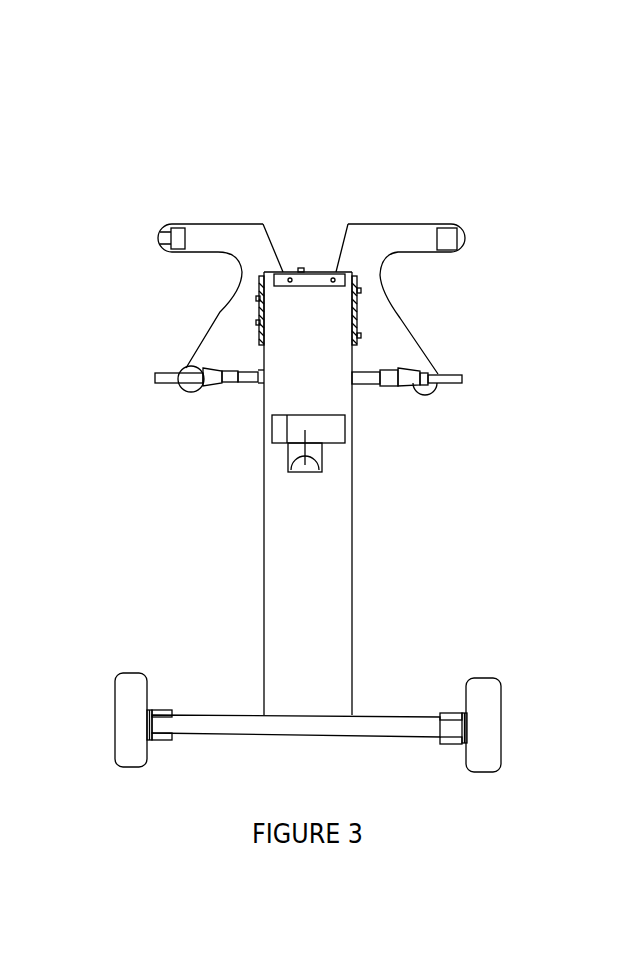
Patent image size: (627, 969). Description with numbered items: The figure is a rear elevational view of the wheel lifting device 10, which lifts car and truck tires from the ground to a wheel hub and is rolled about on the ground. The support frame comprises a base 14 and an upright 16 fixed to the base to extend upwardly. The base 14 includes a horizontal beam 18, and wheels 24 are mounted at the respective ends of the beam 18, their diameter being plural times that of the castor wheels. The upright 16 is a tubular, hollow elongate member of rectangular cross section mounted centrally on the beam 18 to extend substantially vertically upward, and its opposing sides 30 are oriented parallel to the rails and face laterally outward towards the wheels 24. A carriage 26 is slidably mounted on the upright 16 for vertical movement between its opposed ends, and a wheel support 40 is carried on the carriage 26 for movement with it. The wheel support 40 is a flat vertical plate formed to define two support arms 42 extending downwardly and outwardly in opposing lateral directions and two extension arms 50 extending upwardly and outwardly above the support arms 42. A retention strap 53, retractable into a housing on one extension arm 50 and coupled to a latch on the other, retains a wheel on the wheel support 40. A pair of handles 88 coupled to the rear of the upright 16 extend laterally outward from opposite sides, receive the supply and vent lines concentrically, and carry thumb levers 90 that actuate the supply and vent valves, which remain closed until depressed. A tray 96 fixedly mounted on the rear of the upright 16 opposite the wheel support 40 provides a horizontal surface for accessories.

The wheel lifting device 10 is at (282, 100).
The base 14 is at (408, 670).
The upright 16 is at (330, 510).
The horizontal beam 18 is at (237, 730).
The wheels 24 is at (125, 748).
The carriage 26 is at (358, 302).
The sides of the upright 30 is at (262, 463).
The wheel support 40 is at (247, 203).
The support arms 42 is at (190, 352).
The extension arms 50 is at (197, 233).
The retention strap 53 is at (160, 247).
The handles 88 is at (185, 385).
The thumb levers 90 is at (213, 384).
The tray 96 is at (305, 460).